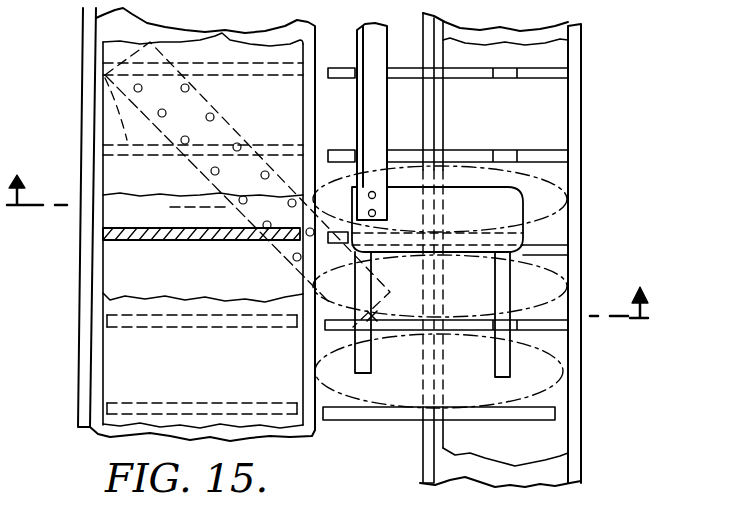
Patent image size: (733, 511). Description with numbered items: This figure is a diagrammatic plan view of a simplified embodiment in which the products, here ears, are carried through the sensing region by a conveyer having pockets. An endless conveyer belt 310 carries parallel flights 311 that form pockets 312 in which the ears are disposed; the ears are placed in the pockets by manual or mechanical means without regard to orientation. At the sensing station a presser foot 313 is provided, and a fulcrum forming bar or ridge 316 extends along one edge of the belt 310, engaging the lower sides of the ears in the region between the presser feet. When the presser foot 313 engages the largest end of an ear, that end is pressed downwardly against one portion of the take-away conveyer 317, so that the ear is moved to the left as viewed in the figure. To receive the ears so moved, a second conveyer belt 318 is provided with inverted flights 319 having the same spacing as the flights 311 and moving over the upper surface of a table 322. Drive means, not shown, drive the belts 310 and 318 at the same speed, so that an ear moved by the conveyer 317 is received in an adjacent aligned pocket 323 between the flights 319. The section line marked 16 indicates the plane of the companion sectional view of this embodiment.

The support frame 310 is at (557, 440).
The horizontal cross bars 311 is at (533, 77).
The vertical post 312 is at (557, 262).
The mounting plate with legs 313 is at (370, 317).
The vertical slide strips 316 is at (425, 447).
The perforated cam plate outline 317 is at (110, 92).
The lower panel 318 is at (110, 382).
The guide bars 319 is at (110, 105).
The upright post 322 is at (110, 20).
The intermediate panel section 323 is at (112, 277).
The section line 16- 16 is at (336, 223).